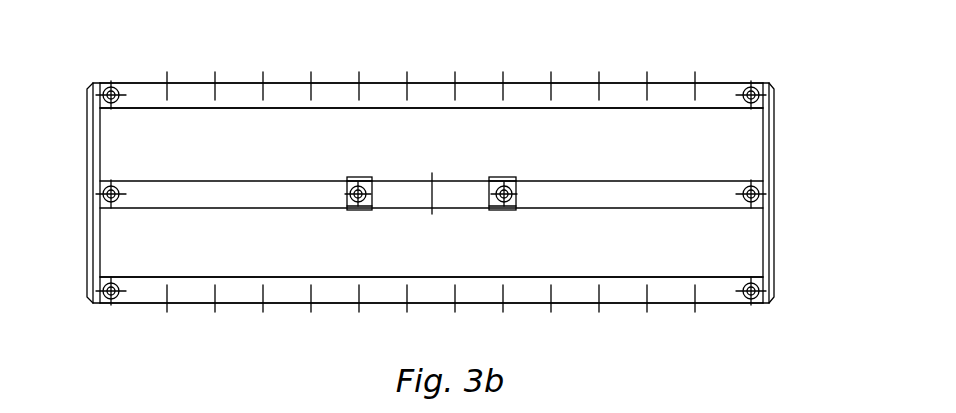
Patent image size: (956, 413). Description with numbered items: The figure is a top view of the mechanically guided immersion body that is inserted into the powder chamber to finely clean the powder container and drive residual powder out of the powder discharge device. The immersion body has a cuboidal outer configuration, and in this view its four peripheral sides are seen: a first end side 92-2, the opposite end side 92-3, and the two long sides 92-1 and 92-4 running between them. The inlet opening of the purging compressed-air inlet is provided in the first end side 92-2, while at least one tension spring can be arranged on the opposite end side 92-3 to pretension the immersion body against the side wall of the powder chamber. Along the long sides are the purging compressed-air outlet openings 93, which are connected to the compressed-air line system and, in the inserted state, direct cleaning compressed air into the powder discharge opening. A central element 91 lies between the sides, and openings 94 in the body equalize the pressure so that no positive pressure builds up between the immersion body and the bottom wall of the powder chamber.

The mounting bracket 91 is at (402, 190).
The bottom frame member 92-1 is at (297, 303).
The first end side 92-2 is at (90, 142).
The opposite end side 92-3 is at (770, 165).
The top frame member 92-4 is at (335, 83).
The purging compressed-air outlet opening 93 is at (216, 83).
The openings for equalizing the pressure 94 is at (638, 130).